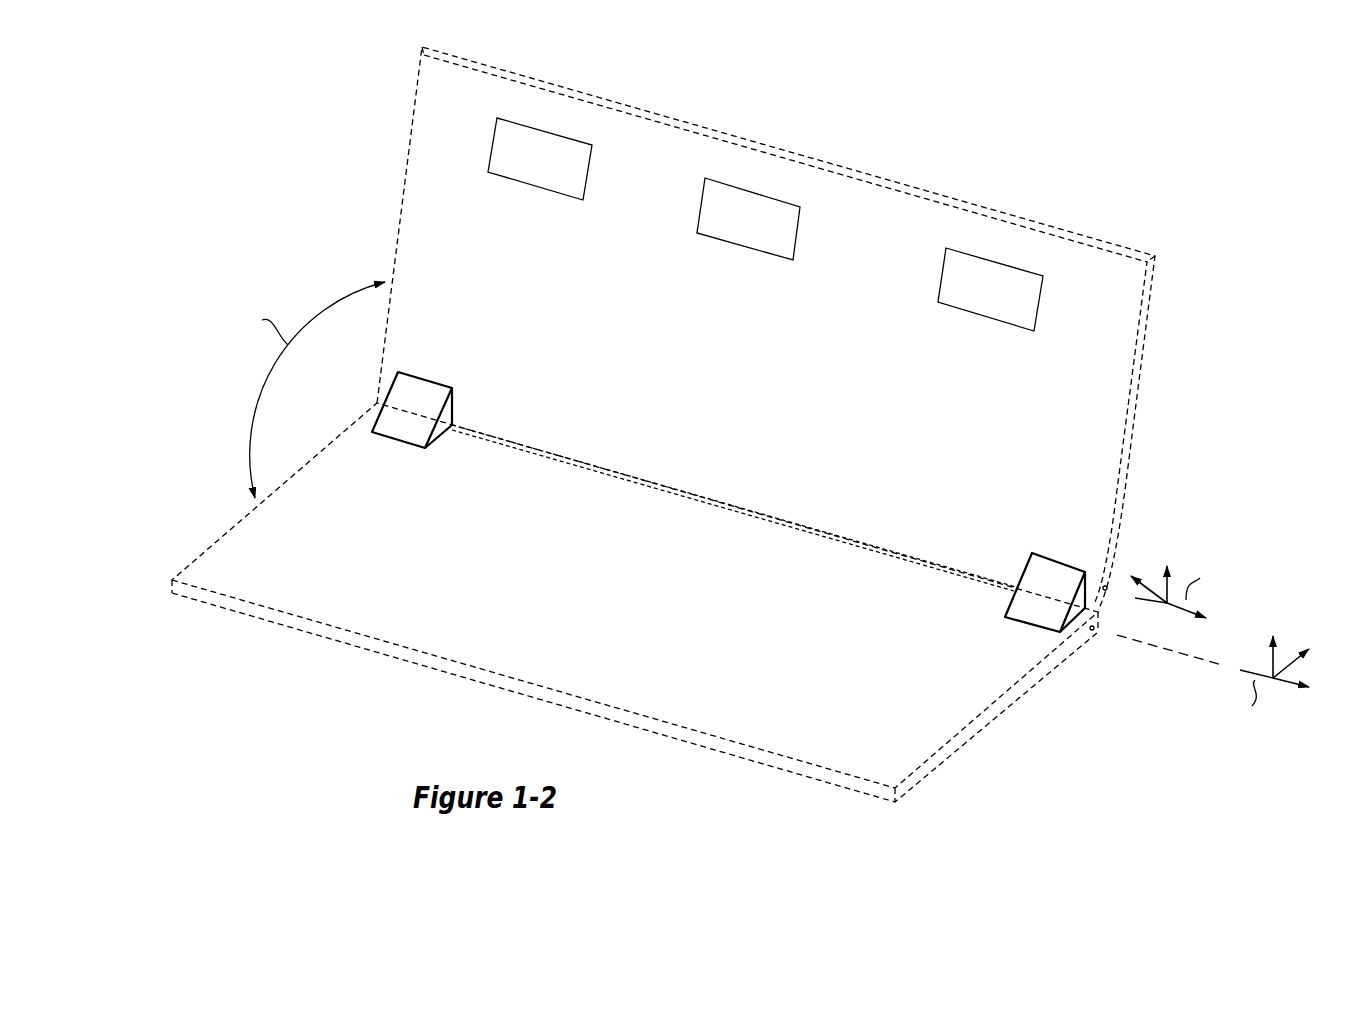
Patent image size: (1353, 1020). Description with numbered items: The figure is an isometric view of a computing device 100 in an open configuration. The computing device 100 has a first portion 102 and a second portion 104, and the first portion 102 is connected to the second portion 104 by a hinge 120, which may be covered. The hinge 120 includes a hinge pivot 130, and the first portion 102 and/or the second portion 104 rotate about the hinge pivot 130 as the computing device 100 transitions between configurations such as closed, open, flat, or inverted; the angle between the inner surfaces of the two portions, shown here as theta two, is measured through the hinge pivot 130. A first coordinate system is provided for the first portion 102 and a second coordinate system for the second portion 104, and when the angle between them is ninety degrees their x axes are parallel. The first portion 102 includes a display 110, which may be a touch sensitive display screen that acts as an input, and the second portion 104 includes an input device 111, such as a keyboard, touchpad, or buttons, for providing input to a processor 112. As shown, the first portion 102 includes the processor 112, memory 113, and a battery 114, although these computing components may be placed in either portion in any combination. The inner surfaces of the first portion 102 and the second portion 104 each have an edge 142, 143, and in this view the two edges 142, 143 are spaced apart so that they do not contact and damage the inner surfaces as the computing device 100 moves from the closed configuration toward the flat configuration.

The computing device 100 is at (142, 398).
The first portion 102 is at (378, 141).
The second portion 104 is at (228, 521).
The display 110 is at (710, 386).
The input device 111 is at (588, 611).
The processor 112 is at (523, 171).
The memory 113 is at (733, 231).
The battery 114 is at (973, 300).
The hinge 120 is at (428, 374).
The hinge pivot 130 is at (370, 398).
The edge 142 is at (630, 476).
The edge 143 is at (695, 497).